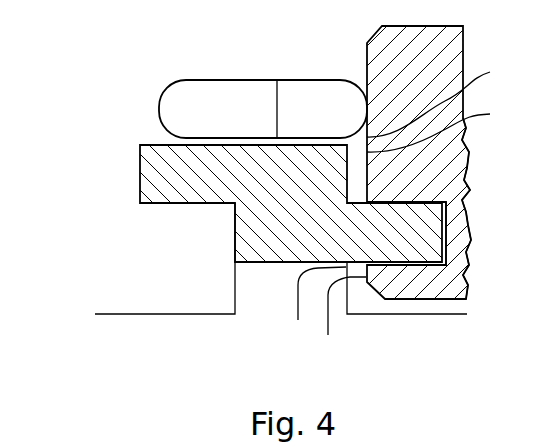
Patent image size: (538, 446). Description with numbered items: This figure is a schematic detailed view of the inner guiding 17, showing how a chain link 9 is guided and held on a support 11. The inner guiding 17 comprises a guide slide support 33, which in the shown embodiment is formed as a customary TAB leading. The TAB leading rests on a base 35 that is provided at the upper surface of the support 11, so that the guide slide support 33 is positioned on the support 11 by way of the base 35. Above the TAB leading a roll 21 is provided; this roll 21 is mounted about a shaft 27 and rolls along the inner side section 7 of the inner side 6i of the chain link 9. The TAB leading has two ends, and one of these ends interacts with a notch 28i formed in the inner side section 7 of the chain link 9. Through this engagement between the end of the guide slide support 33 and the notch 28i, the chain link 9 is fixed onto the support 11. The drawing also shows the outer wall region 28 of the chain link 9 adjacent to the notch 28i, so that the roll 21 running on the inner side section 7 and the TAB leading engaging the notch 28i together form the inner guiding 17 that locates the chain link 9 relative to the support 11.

The inner guiding 17 is at (137, 119).
The shaft 27 is at (276, 112).
The roll 21 is at (236, 121).
The chain link 9 is at (424, 61).
The inner side section 7 is at (413, 210).
The inner side 6i is at (401, 223).
The notch 28i is at (420, 200).
The shoulder 28 is at (500, 208).
The guide slide support 33 is at (293, 207).
The base 35 is at (258, 290).
The support 11 is at (133, 313).